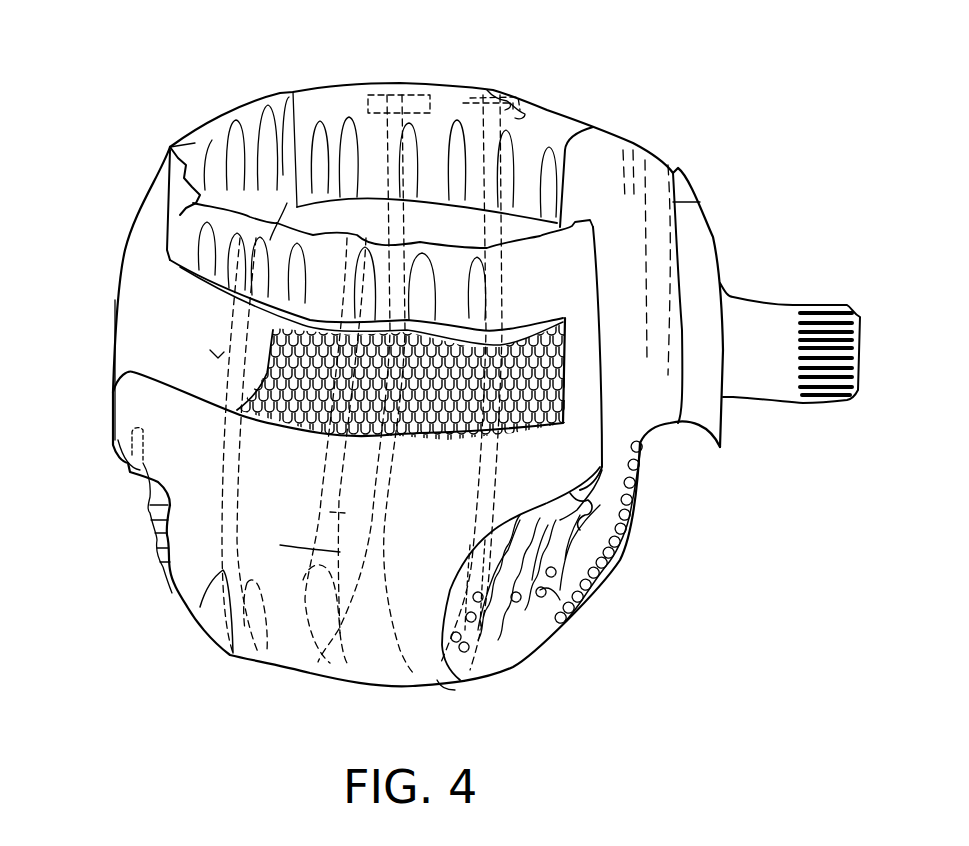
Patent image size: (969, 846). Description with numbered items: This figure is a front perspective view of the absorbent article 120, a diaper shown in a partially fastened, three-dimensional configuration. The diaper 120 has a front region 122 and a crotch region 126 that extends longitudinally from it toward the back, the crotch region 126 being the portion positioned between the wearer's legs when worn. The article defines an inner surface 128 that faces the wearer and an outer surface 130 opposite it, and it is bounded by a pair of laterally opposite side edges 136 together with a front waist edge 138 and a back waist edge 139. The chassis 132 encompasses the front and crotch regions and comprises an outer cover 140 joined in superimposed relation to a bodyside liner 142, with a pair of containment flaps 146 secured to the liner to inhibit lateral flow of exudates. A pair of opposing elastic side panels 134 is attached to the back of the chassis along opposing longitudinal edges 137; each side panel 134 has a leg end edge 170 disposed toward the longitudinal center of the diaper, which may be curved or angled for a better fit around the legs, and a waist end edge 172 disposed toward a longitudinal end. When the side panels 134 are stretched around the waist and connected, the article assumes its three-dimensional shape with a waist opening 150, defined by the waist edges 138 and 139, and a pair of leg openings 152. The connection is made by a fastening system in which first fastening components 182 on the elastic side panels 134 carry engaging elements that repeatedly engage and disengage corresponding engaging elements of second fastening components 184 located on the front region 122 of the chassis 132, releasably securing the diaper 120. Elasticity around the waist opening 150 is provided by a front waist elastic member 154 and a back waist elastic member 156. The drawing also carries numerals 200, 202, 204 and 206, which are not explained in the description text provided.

The absorbent article 120 is at (170, 103).
The waist opening 150 is at (349, 62).
The back waist elastic member 156 is at (380, 84).
The first fastening component 204 is at (430, 80).
The back waist edge 139 is at (493, 90).
The second fastening component 206 is at (520, 100).
The bodyside liner 142 is at (533, 147).
The elastic side panels 134 is at (170, 155).
The longitudinal edges 137 is at (143, 270).
The front waist elastic member 154 is at (287, 203).
The front waist edge 138 is at (300, 228).
The inner surface 128 is at (445, 230).
The waist end edges 172 is at (582, 222).
The first fastening components 182 is at (830, 398).
The elastic member 200 is at (215, 355).
The outer surface 130 is at (245, 463).
The second fastening components 184 is at (345, 458).
The chassis 132 is at (217, 520).
The side edges 136 is at (158, 557).
The front region 122 is at (299, 545).
The longitudinal centerline 202 is at (348, 513).
The outer cover 140 is at (223, 570).
The leg end edge 170 is at (507, 517).
The containment flaps 146 is at (627, 533).
The leg openings 152 is at (540, 603).
The crotch region 126 is at (437, 680).